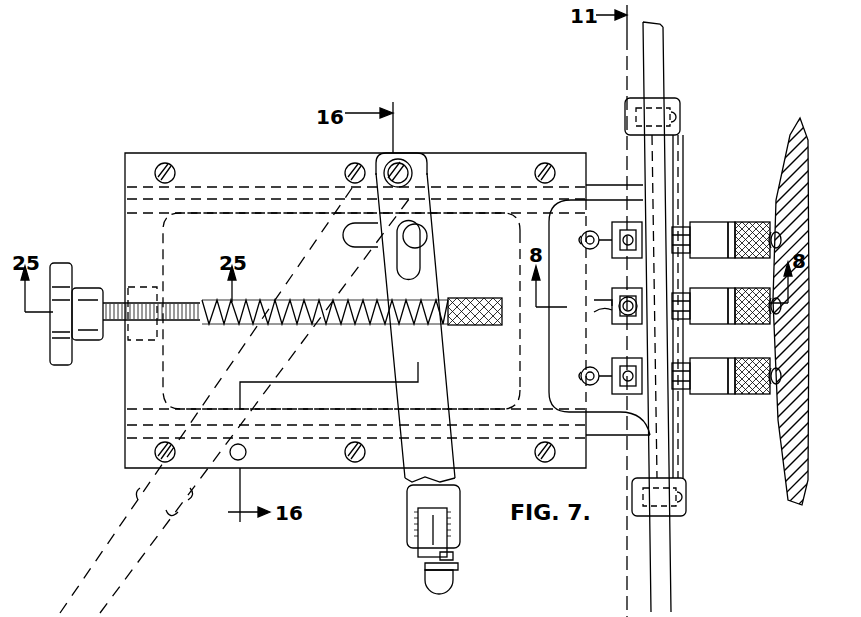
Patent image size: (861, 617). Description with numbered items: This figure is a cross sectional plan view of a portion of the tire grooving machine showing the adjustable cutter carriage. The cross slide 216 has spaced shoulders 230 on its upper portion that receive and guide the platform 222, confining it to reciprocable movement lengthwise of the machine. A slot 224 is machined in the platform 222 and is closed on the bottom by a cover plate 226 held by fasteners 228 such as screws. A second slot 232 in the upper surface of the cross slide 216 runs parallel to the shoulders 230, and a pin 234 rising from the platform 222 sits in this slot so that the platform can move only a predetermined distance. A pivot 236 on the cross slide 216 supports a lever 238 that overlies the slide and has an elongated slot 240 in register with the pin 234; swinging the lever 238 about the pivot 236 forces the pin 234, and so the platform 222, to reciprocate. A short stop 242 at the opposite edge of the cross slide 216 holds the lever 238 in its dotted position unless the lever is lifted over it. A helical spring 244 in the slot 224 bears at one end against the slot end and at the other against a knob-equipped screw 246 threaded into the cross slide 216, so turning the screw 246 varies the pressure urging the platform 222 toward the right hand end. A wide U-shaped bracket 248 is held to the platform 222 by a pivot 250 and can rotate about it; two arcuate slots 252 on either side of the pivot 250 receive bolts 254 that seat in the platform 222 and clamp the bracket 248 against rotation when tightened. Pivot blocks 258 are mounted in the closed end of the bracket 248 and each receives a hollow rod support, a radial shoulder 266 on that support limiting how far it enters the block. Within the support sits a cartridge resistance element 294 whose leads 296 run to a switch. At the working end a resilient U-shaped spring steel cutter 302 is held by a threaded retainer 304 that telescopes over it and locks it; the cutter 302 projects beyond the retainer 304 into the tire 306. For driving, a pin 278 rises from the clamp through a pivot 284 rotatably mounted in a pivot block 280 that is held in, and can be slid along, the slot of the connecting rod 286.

The cross slide 216 is at (184, 162).
The platform 222 is at (303, 224).
The slot 224 is at (480, 330).
The cover plate 226 is at (371, 340).
The fasteners 228 is at (336, 332).
The shoulders 230 is at (126, 200).
The slot 232 is at (368, 242).
The pin 234 is at (418, 236).
The pivot 236 is at (406, 160).
The lever 238 is at (410, 497).
The elongated slot 240 is at (413, 268).
The stop 242 is at (247, 452).
The helical spring 244 is at (490, 298).
The screw 246 is at (119, 328).
The bracket 248 is at (606, 416).
The pivot 250 is at (640, 296).
The arcuate slots 252 is at (583, 243).
The bolts 254 is at (590, 233).
The pivot blocks 258 is at (720, 258).
The shoulder 266 is at (736, 222).
The pin 278 is at (625, 372).
The pivot block 280 is at (685, 230).
The pivot 284 is at (627, 393).
The connecting rod 286 is at (660, 77).
The resistance element 294 is at (598, 300).
The leads 296 is at (600, 310).
The cutter 302 is at (772, 250).
The threaded retainer 304 is at (752, 299).
The tire 306 is at (790, 470).